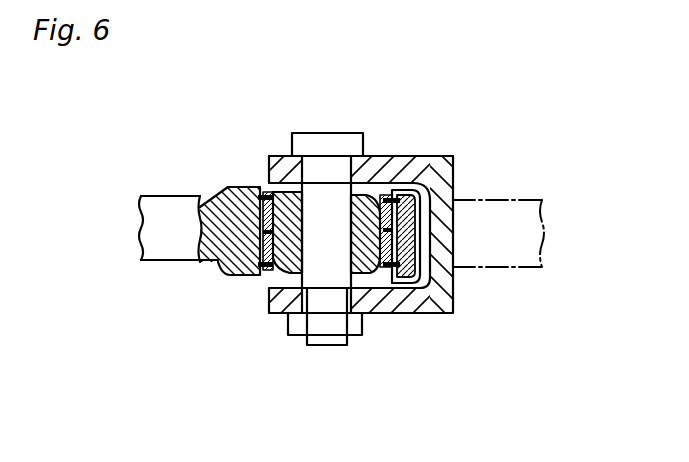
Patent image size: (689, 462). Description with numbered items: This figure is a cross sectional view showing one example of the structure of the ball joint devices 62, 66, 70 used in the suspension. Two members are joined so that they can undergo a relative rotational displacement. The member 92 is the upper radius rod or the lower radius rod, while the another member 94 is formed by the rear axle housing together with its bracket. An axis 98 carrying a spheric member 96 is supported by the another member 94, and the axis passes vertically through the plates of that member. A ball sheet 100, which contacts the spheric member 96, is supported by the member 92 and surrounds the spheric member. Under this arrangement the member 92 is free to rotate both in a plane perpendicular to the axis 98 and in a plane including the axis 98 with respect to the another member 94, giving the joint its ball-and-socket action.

The member 92 is at (172, 213).
The another member 94 is at (270, 157).
The ball joint device 62 is at (427, 202).
The ball joint device 66 is at (427, 202).
The ball joint device 70 is at (394, 134).
The axis 98 is at (323, 272).
The spheric member 96 is at (378, 272).
The ball sheet 100 is at (432, 288).